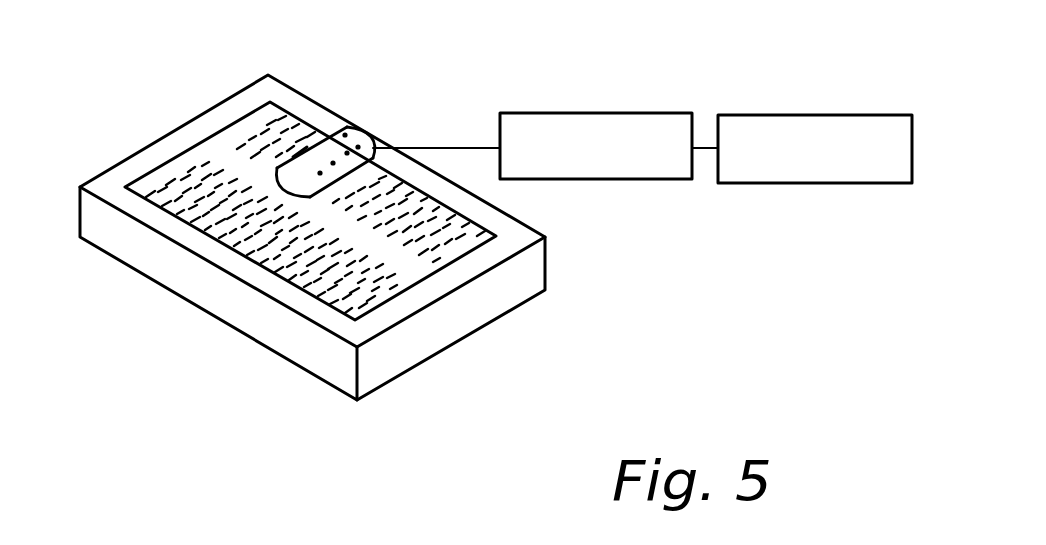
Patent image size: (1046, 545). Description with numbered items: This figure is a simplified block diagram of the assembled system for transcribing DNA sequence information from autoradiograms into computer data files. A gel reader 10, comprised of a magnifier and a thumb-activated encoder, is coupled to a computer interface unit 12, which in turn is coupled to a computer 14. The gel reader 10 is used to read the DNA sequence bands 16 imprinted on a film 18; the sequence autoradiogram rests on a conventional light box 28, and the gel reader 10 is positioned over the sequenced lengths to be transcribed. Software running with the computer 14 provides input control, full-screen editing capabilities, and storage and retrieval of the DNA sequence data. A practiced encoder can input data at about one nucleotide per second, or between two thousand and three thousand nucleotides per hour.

The gel reader 10 is at (360, 124).
The computer interface unit 12 is at (617, 113).
The computer 14 is at (845, 115).
The DNA sequence bands 16 is at (373, 283).
The film 18 is at (497, 233).
The light box 28 is at (530, 272).